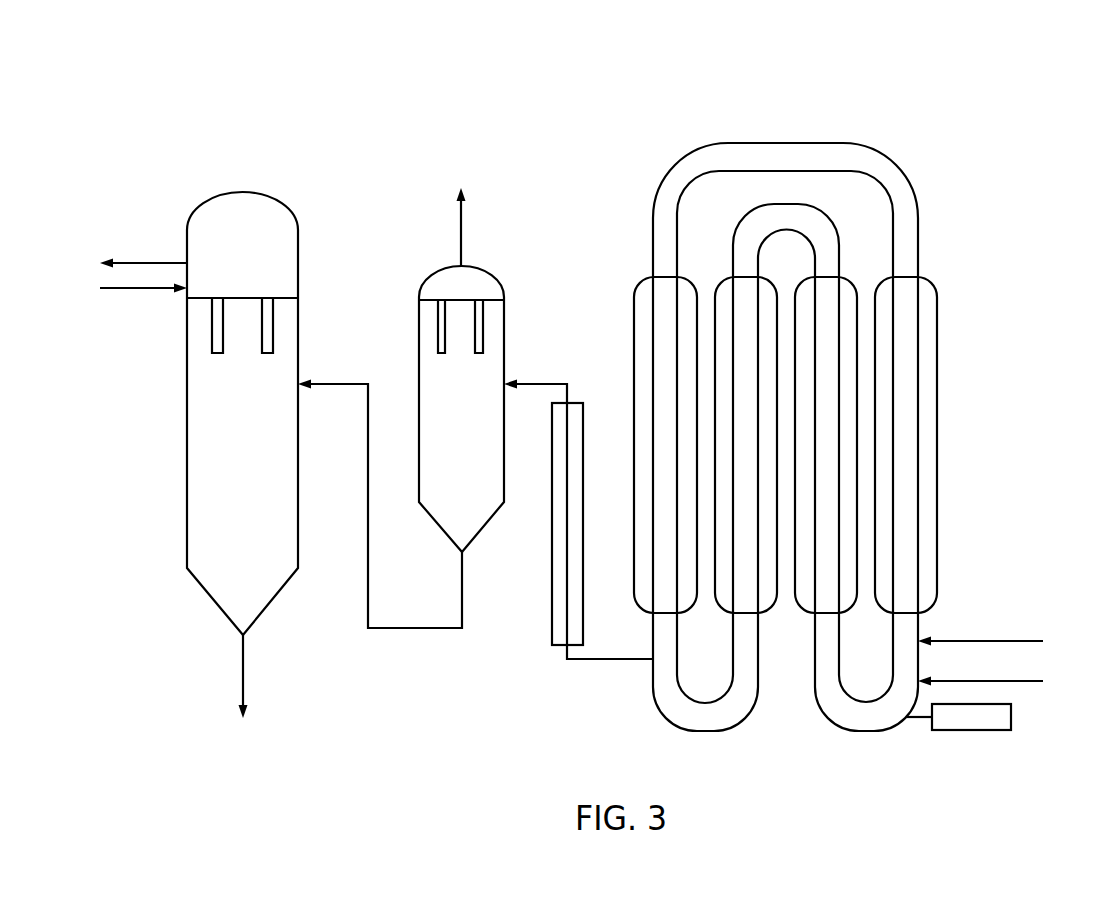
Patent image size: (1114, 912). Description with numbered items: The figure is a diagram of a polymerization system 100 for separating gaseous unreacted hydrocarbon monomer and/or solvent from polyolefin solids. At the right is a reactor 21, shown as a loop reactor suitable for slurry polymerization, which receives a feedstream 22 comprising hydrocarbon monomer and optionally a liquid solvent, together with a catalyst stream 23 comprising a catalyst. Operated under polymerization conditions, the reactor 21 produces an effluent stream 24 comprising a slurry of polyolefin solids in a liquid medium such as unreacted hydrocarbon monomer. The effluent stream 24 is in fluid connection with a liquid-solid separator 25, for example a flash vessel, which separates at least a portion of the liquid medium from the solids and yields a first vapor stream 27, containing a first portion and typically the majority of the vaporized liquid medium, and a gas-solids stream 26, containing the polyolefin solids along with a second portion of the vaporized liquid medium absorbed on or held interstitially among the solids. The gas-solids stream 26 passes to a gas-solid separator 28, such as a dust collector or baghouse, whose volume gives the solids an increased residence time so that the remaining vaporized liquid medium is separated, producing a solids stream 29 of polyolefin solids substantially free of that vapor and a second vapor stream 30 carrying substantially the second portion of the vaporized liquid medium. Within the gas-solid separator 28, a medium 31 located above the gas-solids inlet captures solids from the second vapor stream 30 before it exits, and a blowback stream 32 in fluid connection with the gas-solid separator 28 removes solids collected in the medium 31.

The system 100 is at (850, 52).
The reactor 21 is at (710, 154).
The feedstream 22 is at (1007, 641).
The catalyst stream 23 is at (1018, 681).
The effluent stream 24 is at (618, 662).
The liquid-solid separator 25 is at (478, 438).
The gas-solids stream 26 is at (403, 628).
The first vapor stream 27 is at (461, 232).
The gas-solid separator 28 is at (258, 438).
The solids stream 29 is at (243, 680).
The second vapor stream 30 is at (147, 263).
The medium 31 is at (200, 300).
The blowback stream 32 is at (118, 288).